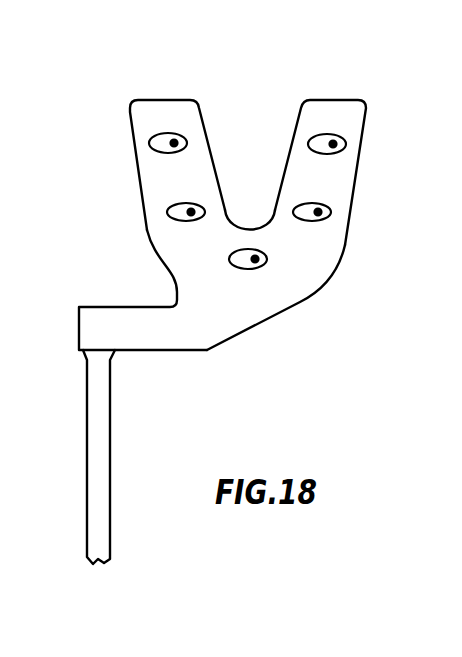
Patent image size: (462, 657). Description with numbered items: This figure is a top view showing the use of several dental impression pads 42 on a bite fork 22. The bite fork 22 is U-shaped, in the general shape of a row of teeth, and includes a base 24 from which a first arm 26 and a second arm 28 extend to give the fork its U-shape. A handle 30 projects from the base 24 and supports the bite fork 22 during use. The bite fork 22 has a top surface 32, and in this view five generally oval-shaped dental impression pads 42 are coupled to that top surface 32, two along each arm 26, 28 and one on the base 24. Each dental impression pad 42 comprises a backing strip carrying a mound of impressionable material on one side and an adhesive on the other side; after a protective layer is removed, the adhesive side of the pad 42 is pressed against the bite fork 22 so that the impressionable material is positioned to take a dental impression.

The bite fork 22 is at (237, 336).
The base 24 is at (212, 345).
The first arm 26 is at (362, 153).
The second arm 28 is at (126, 132).
The handle 30 is at (85, 542).
The top surface 32 is at (238, 303).
The dental impression pad 42 is at (167, 132).